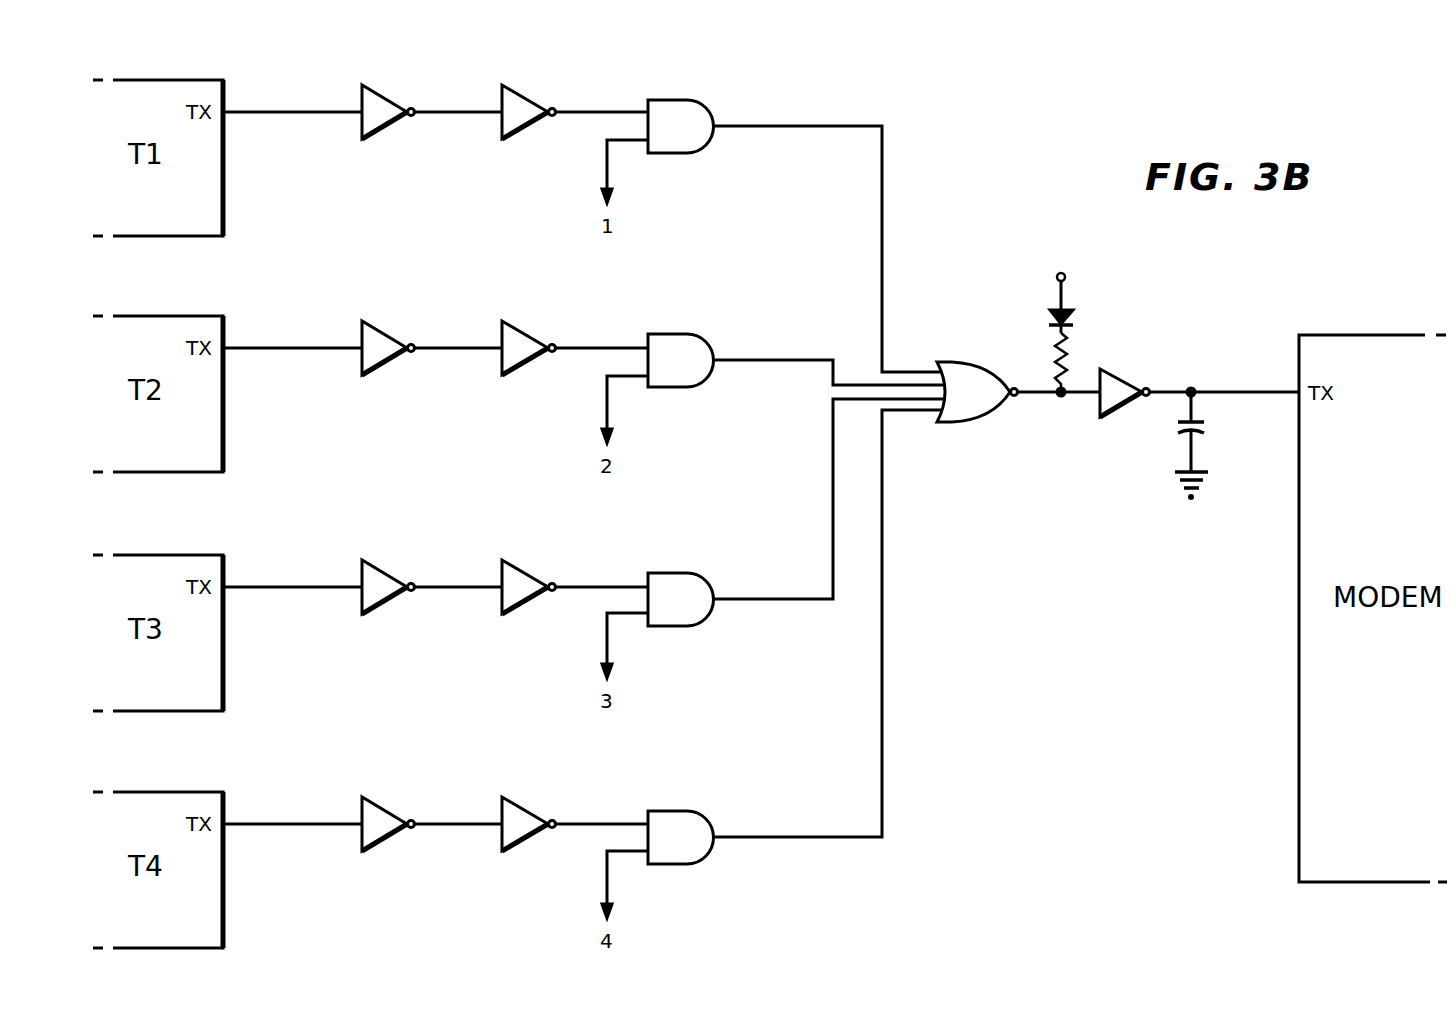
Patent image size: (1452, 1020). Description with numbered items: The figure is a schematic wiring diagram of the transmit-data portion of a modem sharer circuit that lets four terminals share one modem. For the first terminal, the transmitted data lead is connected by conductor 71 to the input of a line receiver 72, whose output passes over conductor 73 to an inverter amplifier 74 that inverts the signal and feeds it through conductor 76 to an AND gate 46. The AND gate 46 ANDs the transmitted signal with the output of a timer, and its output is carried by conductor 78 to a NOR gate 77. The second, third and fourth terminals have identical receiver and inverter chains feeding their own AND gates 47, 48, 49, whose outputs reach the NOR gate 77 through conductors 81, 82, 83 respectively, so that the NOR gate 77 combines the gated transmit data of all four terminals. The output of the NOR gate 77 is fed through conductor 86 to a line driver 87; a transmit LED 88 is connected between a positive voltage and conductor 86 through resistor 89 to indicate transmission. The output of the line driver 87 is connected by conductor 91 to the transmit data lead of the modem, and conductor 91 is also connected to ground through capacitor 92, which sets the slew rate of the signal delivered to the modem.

The conductor 71 is at (295, 110).
The line receiver 72 is at (384, 128).
The conductor 73 is at (461, 110).
The inverter amplifier 74 is at (523, 128).
The conductor 76 is at (588, 110).
The AND gate 46 is at (709, 148).
The AND gate 47 is at (699, 336).
The AND gate 48 is at (699, 575).
The AND gate 49 is at (704, 859).
The conductor 78 is at (883, 191).
The conductor 81 is at (775, 357).
The conductor 82 is at (783, 601).
The conductor 83 is at (790, 833).
The NOR gate 77 is at (957, 425).
The conductor 86 is at (1036, 396).
The line driver 87 is at (1120, 411).
The transmit LED 88 is at (1048, 316).
The resistor 89 is at (1053, 362).
The conductor 91 is at (1167, 388).
The capacitor 92 is at (1198, 432).